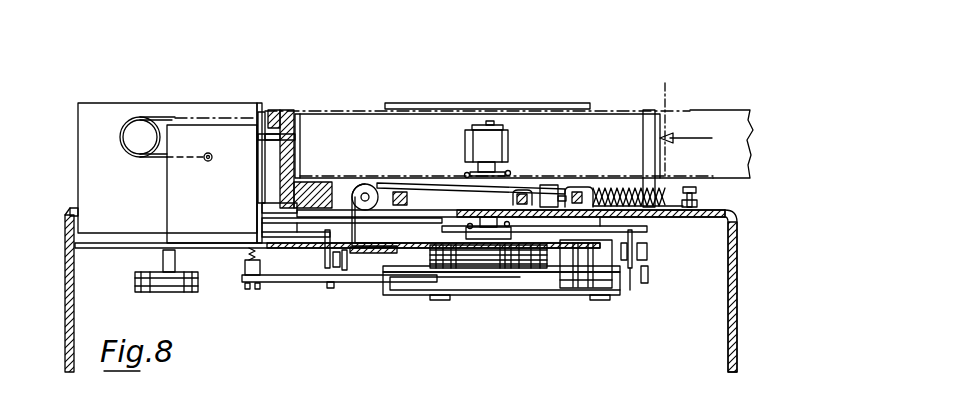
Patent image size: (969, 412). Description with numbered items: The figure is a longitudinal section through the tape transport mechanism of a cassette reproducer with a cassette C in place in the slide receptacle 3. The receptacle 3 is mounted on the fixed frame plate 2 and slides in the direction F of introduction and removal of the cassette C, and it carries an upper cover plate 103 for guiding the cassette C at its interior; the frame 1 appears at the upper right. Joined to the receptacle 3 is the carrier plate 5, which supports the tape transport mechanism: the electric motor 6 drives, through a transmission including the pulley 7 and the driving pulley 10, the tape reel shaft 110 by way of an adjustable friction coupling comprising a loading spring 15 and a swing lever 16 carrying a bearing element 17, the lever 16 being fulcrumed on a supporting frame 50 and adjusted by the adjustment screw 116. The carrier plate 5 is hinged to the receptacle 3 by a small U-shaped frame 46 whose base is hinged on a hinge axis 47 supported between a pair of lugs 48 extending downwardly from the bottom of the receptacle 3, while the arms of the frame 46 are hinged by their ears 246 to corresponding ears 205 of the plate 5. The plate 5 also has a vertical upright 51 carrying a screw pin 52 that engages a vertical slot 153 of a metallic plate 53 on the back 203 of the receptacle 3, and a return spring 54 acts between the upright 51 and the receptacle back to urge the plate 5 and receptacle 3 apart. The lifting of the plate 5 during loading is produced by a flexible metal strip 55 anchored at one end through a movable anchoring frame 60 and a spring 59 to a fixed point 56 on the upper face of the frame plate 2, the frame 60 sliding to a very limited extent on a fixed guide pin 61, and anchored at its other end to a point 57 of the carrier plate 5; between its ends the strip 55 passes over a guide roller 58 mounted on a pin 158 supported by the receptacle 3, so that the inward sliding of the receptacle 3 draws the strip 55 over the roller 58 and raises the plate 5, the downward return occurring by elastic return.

The conveyor frame 1 is at (608, 108).
The fixed frame plate 2 is at (69, 212).
The slide receptacle 3 is at (327, 103).
The carrier plate 5 is at (101, 250).
The electric motor 6 is at (88, 110).
The pulley 7 is at (195, 290).
The driving pulley 10 is at (531, 268).
The loading spring 15 is at (474, 167).
The swing lever 16 is at (290, 284).
The bearing element 17 is at (490, 275).
The U-shaped frame 46 is at (630, 232).
The hinge axis 47 is at (554, 276).
The lug 48 is at (285, 231).
The supporting frame 50 is at (456, 295).
The vertical upright 51 is at (181, 203).
The screw pin 52 is at (293, 140).
The metallic plate 53 is at (282, 108).
The return spring 54 is at (150, 118).
The flexible strip element 55 is at (406, 185).
The fixed point 56 is at (689, 187).
The point of the carrier plate 57 is at (380, 250).
The guide roller 58 is at (362, 190).
The spring 59 is at (629, 200).
The movable anchoring frame 60 is at (568, 195).
The fixed guide pin 61 is at (550, 188).
The upper cover plate 103 is at (530, 103).
The tape reel shaft 110 is at (505, 168).
The adjustment screw 116 is at (247, 260).
The vertical slot 153 is at (268, 130).
The pin 158 is at (367, 192).
The back of the receptacle 203 is at (284, 110).
The ears of the carrier plate 205 is at (342, 270).
The ears of the U-frame 246 is at (326, 268).
The cassette C is at (662, 122).
The direction of introduction F is at (684, 138).